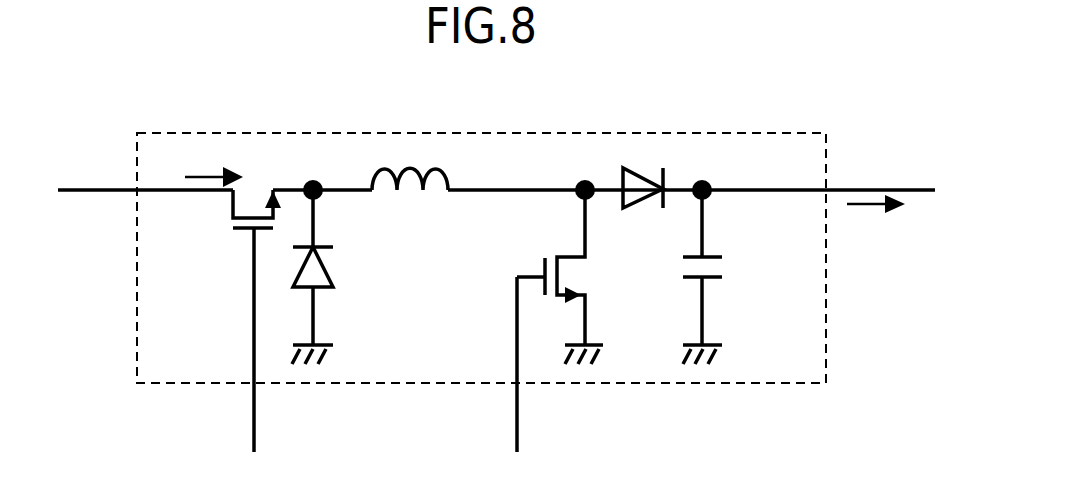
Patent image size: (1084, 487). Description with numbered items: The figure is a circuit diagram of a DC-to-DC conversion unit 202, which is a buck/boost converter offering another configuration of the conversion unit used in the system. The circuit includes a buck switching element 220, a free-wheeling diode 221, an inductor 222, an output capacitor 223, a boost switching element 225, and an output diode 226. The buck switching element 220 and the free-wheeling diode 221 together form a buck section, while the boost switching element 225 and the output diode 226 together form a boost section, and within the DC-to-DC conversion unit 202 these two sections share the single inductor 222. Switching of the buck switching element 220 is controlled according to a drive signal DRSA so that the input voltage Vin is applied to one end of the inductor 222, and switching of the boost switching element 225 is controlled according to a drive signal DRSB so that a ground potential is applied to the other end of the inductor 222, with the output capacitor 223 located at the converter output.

The DC-to-DC conversion unit 202 is at (826, 265).
The buck switching element 220 is at (245, 230).
The free-wheeling diode 221 is at (333, 287).
The inductor 222 is at (397, 191).
The output capacitor 223 is at (722, 276).
The boost switching element 225 is at (557, 256).
The output diode 226 is at (630, 207).